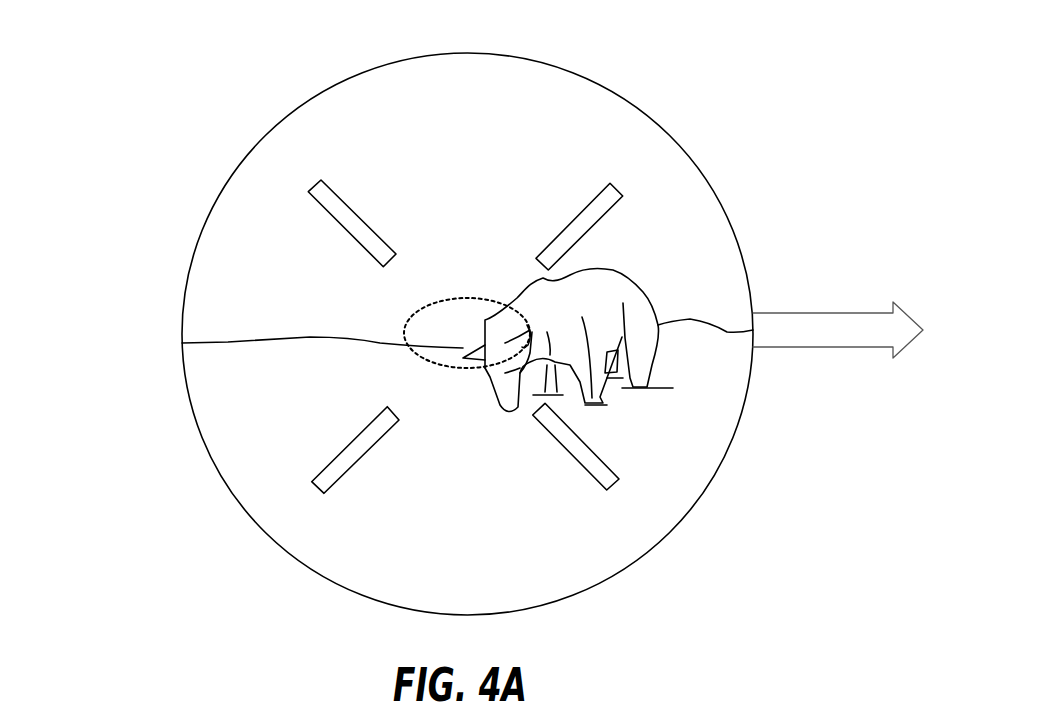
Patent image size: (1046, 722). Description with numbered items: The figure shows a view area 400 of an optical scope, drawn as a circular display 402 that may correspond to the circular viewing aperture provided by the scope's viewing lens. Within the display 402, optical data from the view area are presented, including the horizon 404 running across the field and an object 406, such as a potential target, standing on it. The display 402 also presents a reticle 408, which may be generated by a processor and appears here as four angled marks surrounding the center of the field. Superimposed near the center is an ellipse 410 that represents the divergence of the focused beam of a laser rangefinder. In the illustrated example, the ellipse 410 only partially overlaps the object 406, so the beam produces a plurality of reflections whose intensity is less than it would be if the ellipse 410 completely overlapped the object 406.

The view area 400 is at (93, 29).
The circular display 402 is at (405, 58).
The horizon 404 is at (228, 342).
The object 406 is at (628, 293).
The reticle 408 is at (358, 217).
The ellipse 410 is at (468, 297).